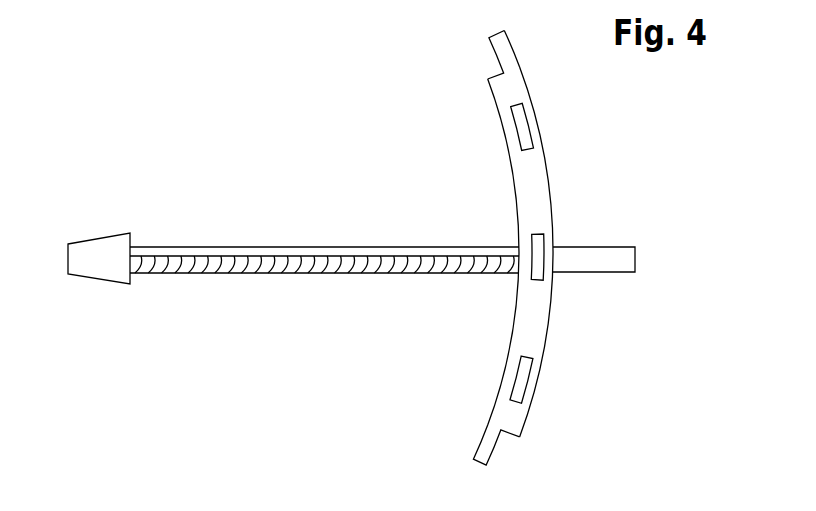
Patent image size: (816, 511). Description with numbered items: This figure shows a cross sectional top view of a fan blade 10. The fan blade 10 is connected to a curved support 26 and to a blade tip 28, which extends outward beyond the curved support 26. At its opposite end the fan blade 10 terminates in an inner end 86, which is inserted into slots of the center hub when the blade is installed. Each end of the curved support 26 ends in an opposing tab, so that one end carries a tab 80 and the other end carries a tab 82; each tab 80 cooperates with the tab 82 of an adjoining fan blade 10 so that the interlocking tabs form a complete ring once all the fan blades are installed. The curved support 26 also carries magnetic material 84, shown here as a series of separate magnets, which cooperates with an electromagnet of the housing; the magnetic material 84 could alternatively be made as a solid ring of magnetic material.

The fan blade 10 is at (302, 246).
The curved support 26 is at (546, 326).
The blade tip 28 is at (616, 253).
The tab 80 is at (497, 446).
The tab 82 is at (503, 49).
The magnetic material 84 is at (540, 123).
The inner end 86 is at (101, 247).